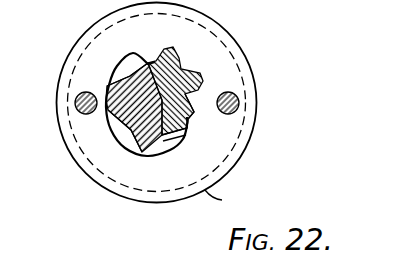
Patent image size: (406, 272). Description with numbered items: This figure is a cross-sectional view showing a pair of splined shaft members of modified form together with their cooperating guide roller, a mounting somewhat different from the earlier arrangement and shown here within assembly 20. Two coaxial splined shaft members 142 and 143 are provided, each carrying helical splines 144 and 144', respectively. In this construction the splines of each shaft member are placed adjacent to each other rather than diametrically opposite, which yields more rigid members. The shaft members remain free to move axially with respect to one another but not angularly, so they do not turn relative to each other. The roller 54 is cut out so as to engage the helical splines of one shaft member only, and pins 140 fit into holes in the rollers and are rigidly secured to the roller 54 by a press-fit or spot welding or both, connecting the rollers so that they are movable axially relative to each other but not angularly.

The lock assembly 20 is at (131, 103).
The roller 54 is at (224, 203).
The pin 140 is at (75, 103).
The splined shaft member 142 is at (112, 135).
The splined shaft member 143 is at (199, 71).
The helical splines 144 is at (125, 148).
The helical splines 144' is at (234, 119).